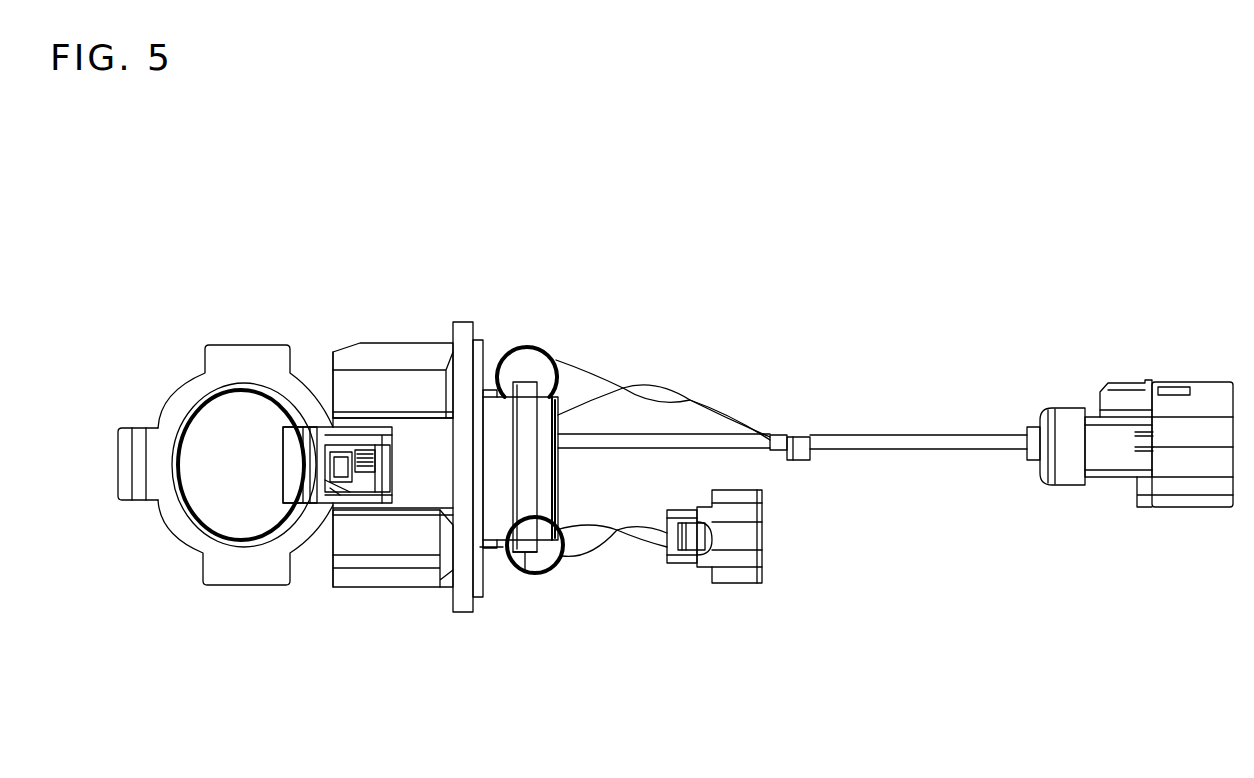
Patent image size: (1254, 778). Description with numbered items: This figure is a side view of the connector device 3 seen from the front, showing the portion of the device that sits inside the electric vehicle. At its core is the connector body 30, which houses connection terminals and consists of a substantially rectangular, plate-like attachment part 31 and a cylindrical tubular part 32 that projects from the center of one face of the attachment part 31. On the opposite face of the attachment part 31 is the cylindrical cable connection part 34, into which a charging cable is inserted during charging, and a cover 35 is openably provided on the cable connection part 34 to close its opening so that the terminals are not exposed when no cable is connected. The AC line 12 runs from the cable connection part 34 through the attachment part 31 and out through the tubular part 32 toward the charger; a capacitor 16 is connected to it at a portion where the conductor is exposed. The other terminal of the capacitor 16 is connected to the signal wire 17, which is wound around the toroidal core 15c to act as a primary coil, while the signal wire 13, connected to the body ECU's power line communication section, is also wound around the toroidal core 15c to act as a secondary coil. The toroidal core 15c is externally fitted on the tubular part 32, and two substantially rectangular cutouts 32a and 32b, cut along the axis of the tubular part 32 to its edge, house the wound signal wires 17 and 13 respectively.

The connector device 3 is at (549, 262).
The AC line 12 is at (628, 445).
The signal wire 13 is at (590, 557).
The toroidal core 15c is at (528, 575).
The capacitor 16 is at (798, 458).
The signal wire 17 is at (653, 385).
The connector body 30 is at (461, 310).
The attachment part 31 is at (476, 335).
The tubular part 32 is at (490, 533).
The cutout 32a is at (557, 362).
The cutout 32b is at (500, 553).
The cable connection part 34 is at (343, 390).
The cover 35 is at (192, 392).